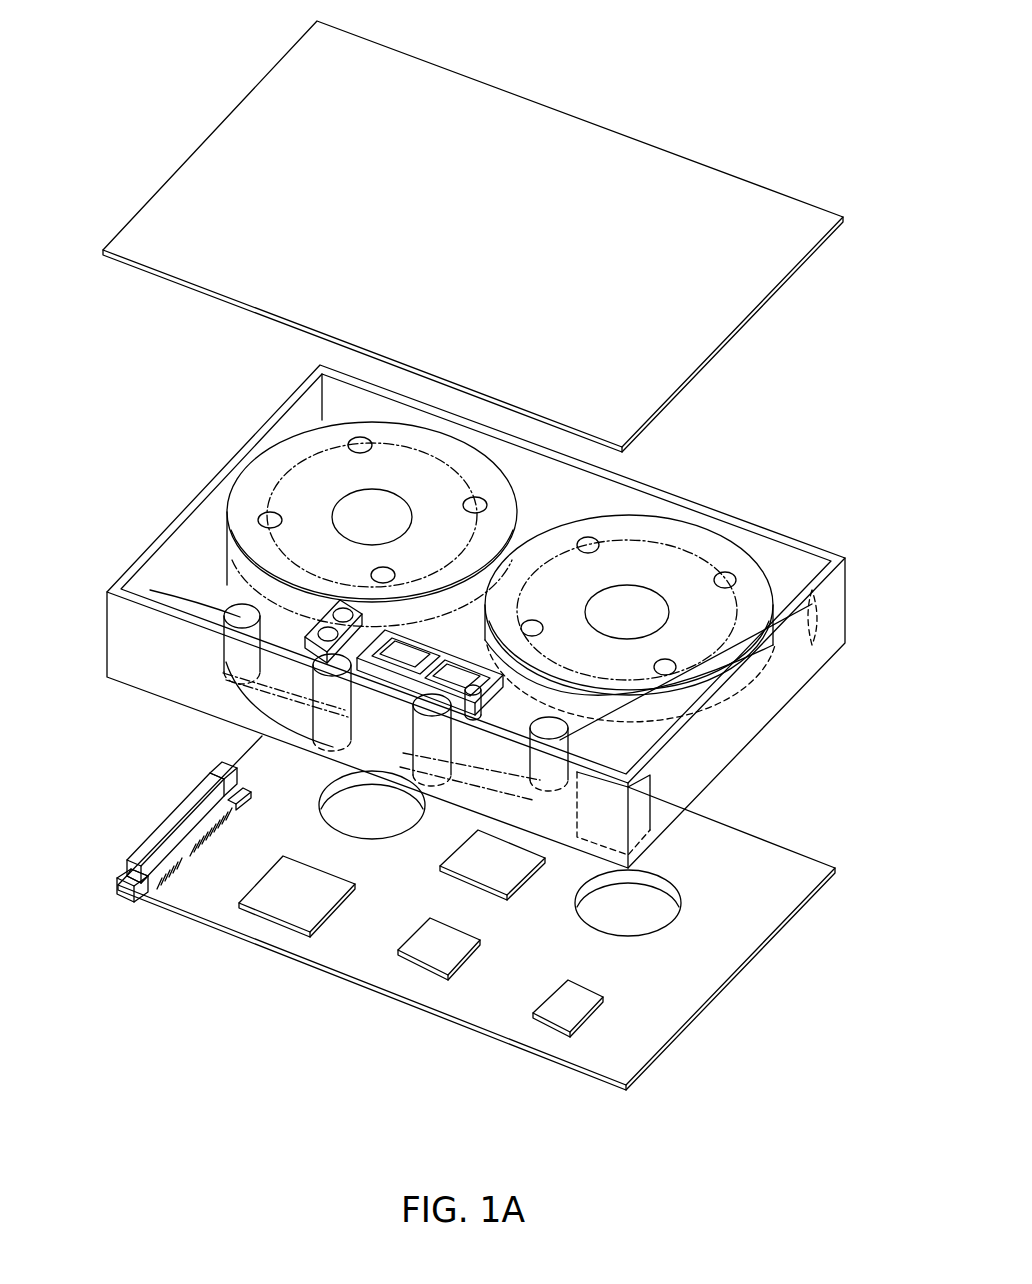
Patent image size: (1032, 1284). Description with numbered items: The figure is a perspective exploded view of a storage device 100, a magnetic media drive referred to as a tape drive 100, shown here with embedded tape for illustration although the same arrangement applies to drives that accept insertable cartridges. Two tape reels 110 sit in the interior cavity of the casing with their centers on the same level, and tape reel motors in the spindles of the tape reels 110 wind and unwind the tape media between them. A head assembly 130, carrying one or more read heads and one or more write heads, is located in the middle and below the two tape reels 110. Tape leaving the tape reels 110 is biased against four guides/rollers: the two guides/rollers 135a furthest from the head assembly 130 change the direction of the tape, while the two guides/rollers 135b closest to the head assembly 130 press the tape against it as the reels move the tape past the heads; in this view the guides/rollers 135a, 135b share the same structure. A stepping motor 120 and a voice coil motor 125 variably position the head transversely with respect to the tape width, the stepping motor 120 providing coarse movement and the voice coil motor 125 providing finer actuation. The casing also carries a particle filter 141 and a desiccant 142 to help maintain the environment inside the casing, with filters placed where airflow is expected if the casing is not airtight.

The storage device 100 is at (744, 86).
The tape reel 110 is at (427, 427).
The stepping motor 120 is at (293, 632).
The voice coil motor 125 is at (388, 655).
The head assembly 130 is at (400, 584).
The tape guide/roller 135a is at (150, 590).
The tape guide/roller 135b is at (316, 670).
The particle filter 141 is at (822, 624).
The desiccant 142 is at (640, 812).